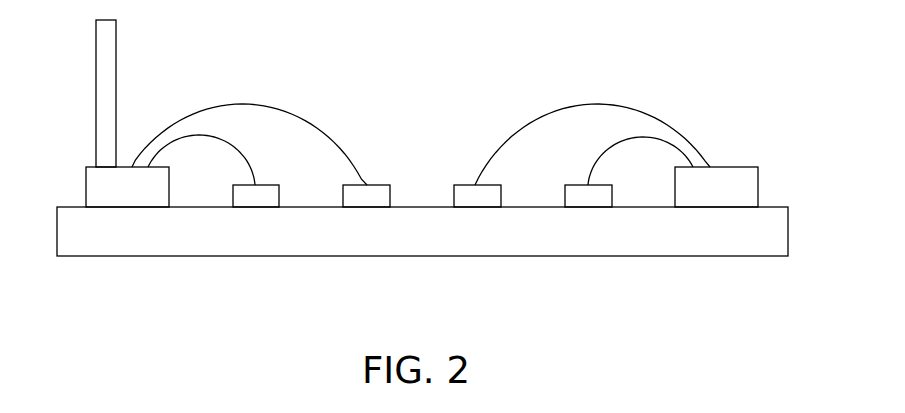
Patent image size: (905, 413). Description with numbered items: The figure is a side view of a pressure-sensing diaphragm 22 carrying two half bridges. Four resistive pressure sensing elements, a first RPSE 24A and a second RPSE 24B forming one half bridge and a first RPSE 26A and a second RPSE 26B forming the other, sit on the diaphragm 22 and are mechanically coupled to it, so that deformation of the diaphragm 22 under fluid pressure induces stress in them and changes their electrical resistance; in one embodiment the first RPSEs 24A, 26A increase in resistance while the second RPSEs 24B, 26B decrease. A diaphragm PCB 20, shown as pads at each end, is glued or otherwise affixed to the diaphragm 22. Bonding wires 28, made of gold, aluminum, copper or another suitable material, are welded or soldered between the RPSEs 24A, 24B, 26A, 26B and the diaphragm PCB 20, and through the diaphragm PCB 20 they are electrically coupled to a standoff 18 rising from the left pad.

The standoff 18 is at (96, 85).
The diaphragm PCB 20 is at (86, 187).
The diaphragm 22 is at (788, 233).
The first RPSE 24A is at (273, 185).
The second RPSE 24B is at (382, 185).
The first RPSE 26A is at (573, 185).
The second RPSE 26B is at (462, 185).
The bonding wire 28 is at (200, 108).